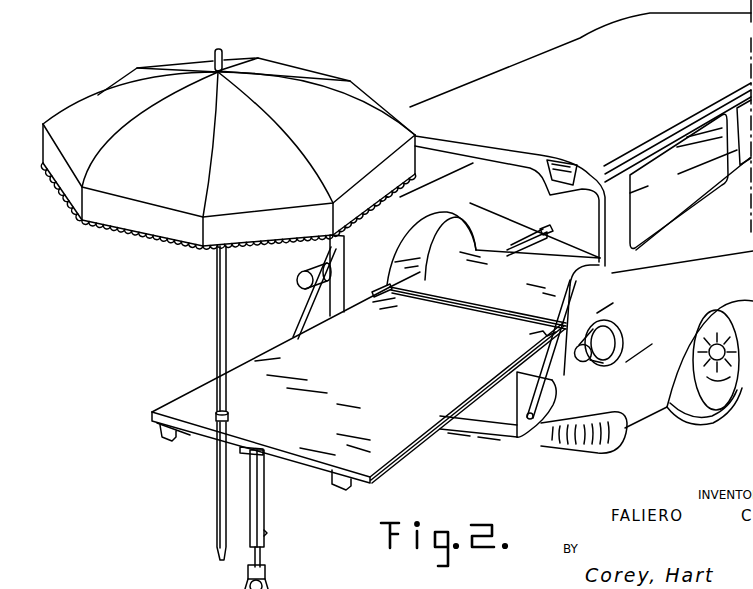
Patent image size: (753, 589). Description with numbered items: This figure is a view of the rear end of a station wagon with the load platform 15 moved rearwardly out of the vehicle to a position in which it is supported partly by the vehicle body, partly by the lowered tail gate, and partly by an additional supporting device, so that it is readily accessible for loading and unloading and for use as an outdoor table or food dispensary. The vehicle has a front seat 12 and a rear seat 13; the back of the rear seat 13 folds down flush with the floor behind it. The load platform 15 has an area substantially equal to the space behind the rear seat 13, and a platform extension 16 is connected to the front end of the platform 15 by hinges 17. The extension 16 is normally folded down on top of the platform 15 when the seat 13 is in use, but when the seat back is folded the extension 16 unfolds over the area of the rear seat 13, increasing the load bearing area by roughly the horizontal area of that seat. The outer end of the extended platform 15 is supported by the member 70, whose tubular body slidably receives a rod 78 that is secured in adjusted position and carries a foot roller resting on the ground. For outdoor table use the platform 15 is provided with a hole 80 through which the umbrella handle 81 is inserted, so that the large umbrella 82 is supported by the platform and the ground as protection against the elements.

The front seat 12 is at (716, 176).
The rear seat 13 is at (655, 208).
The load platform 15 is at (394, 386).
The platform extension 16 is at (520, 288).
The hinges 17 is at (438, 300).
The supporting member 70 is at (261, 504).
The rod 78 is at (265, 560).
The hole 80 is at (230, 419).
The umbrella handle 81 is at (216, 338).
The umbrella 82 is at (149, 247).